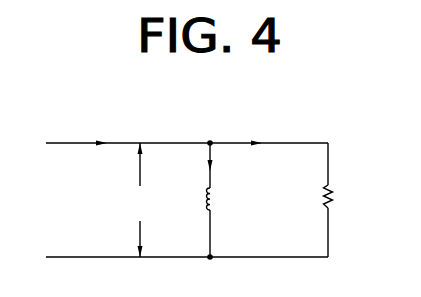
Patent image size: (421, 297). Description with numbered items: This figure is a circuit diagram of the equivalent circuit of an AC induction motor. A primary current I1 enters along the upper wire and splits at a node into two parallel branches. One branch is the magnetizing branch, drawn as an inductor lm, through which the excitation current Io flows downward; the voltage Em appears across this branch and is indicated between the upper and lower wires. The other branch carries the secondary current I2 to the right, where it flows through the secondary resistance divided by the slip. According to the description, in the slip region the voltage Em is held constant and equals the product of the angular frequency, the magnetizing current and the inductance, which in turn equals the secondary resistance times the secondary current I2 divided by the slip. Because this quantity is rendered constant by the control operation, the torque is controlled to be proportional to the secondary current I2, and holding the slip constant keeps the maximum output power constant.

The primary (stator) current I1 is at (112, 133).
The secondary current I2 is at (270, 133).
The excitation current Io is at (222, 165).
The voltage Em is at (145, 200).
The magnetizing inductance lm is at (227, 222).